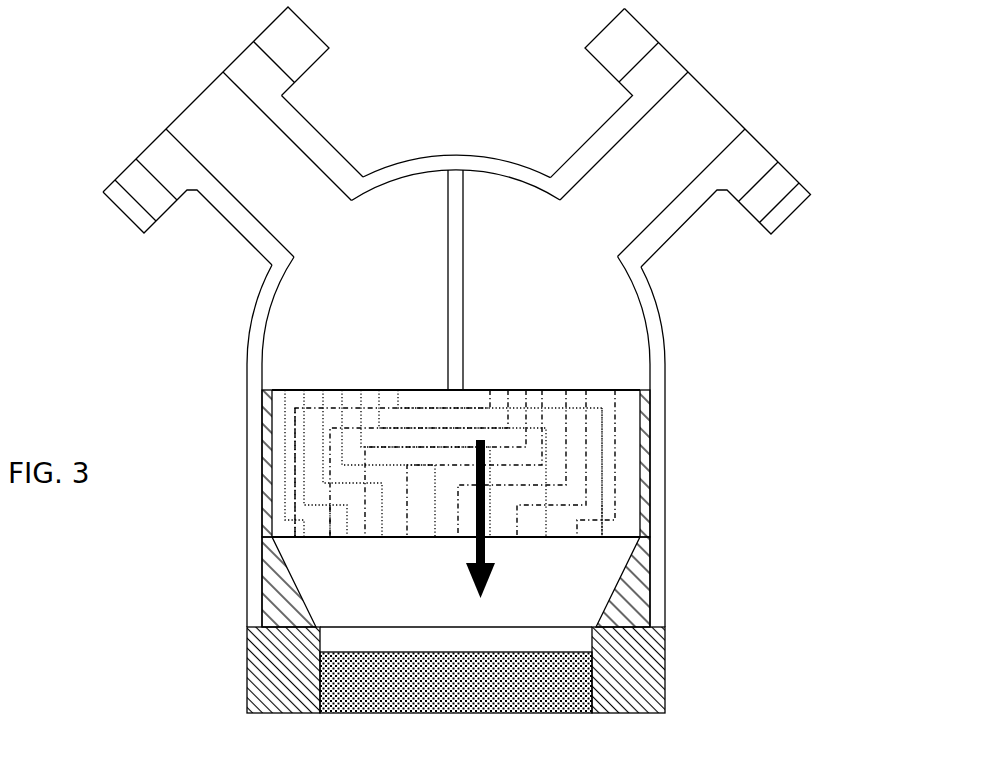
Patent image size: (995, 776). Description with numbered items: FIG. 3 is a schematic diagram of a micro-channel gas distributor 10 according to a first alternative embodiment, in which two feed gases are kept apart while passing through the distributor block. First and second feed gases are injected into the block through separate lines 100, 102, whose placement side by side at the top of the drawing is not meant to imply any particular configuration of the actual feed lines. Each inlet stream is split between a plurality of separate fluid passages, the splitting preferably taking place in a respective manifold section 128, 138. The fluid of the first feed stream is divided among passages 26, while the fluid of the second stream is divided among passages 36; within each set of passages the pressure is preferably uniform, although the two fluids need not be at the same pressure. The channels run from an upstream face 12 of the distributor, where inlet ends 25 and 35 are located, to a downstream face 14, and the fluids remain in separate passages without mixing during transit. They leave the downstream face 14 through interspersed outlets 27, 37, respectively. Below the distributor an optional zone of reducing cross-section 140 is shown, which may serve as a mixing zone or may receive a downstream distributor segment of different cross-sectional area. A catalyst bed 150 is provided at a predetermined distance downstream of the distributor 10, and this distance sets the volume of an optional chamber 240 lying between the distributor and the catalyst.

The micro-channel gas distributor 10 is at (650, 431).
The first feed line 100 is at (290, 178).
The second feed line 102 is at (642, 207).
The upstream face 12 is at (450, 388).
The first manifold section 128 is at (400, 261).
The second manifold section 138 is at (552, 261).
The downstream face 14 is at (391, 540).
The inlet ends 25 is at (402, 390).
The second fluid flow path 35 is at (510, 392).
The first fluid passages 26 is at (323, 457).
The second fluid passages 36 is at (613, 493).
The second fluid outlets 37 is at (328, 538).
The outlet channel ends 27 is at (597, 538).
The zone of reducing cross-section 140 is at (611, 598).
The catalyst bed 150 is at (315, 665).
The chamber 240 is at (560, 638).